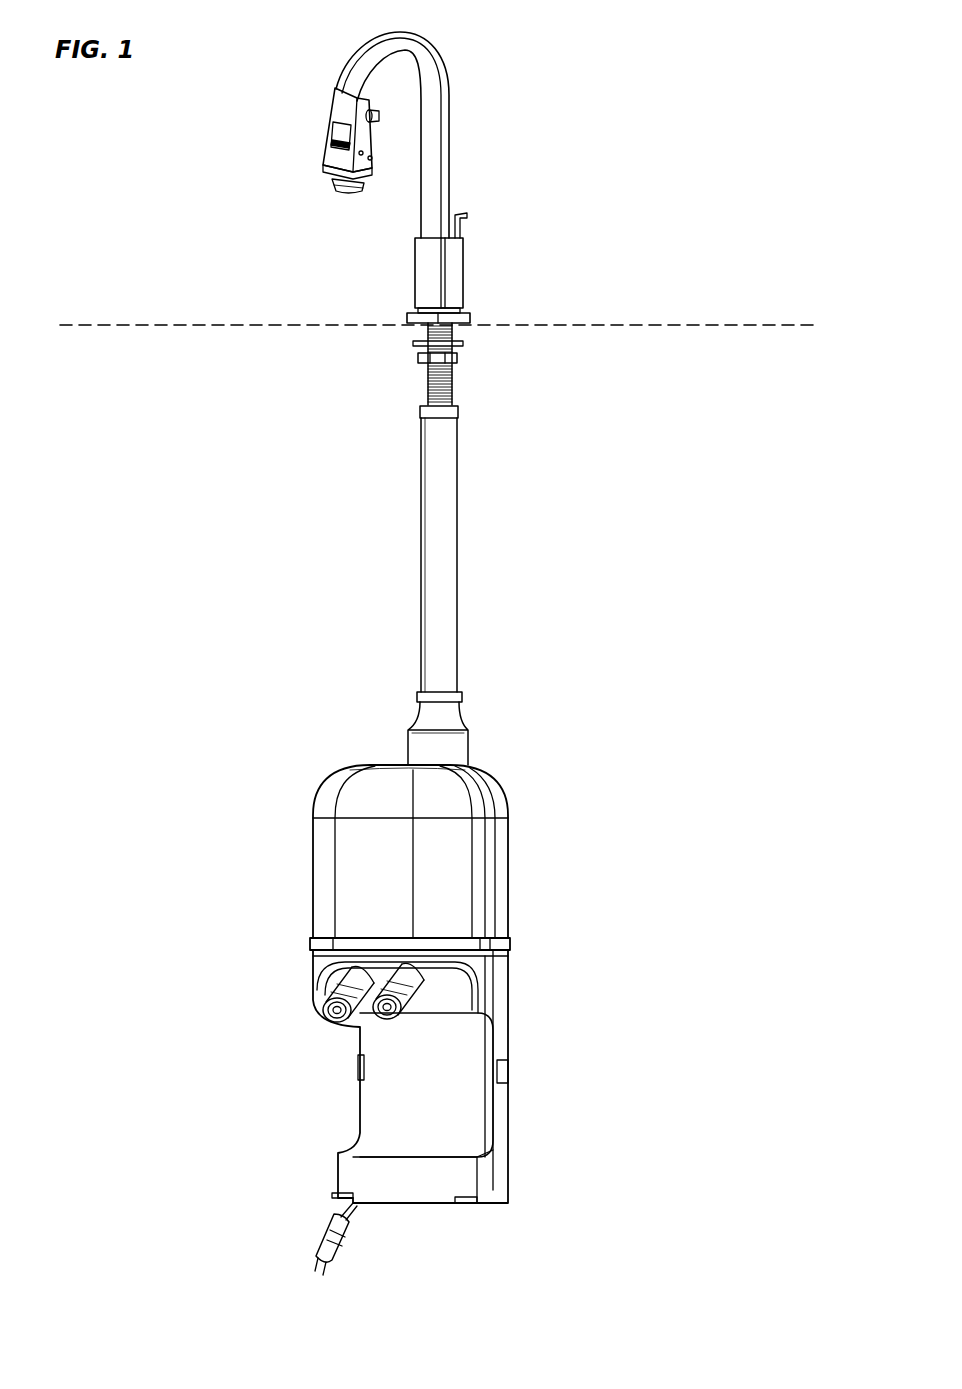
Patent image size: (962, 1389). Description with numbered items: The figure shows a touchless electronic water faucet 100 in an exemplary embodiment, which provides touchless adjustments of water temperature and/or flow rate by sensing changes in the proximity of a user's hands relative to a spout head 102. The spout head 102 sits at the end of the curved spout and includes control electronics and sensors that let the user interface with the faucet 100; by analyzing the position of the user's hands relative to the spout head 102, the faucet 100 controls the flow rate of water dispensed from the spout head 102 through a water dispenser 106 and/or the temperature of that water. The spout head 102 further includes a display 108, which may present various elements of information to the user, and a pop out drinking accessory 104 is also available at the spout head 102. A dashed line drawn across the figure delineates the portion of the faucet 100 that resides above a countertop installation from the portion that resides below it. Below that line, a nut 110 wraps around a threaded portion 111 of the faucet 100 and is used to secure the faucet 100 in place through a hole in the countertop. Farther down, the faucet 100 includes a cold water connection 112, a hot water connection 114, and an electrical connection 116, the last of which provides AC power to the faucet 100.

The touchless electronic water faucet 100 is at (583, 90).
The spout head 102 is at (306, 175).
The pop out drinking accessory 104 is at (381, 117).
The water dispenser 106 is at (337, 181).
The display 108 is at (342, 125).
The nut 110 is at (461, 351).
The threaded portion 111 is at (455, 387).
The cold water connection 112 is at (338, 977).
The hot water connection 114 is at (418, 977).
The electrical connection 116 is at (344, 1234).